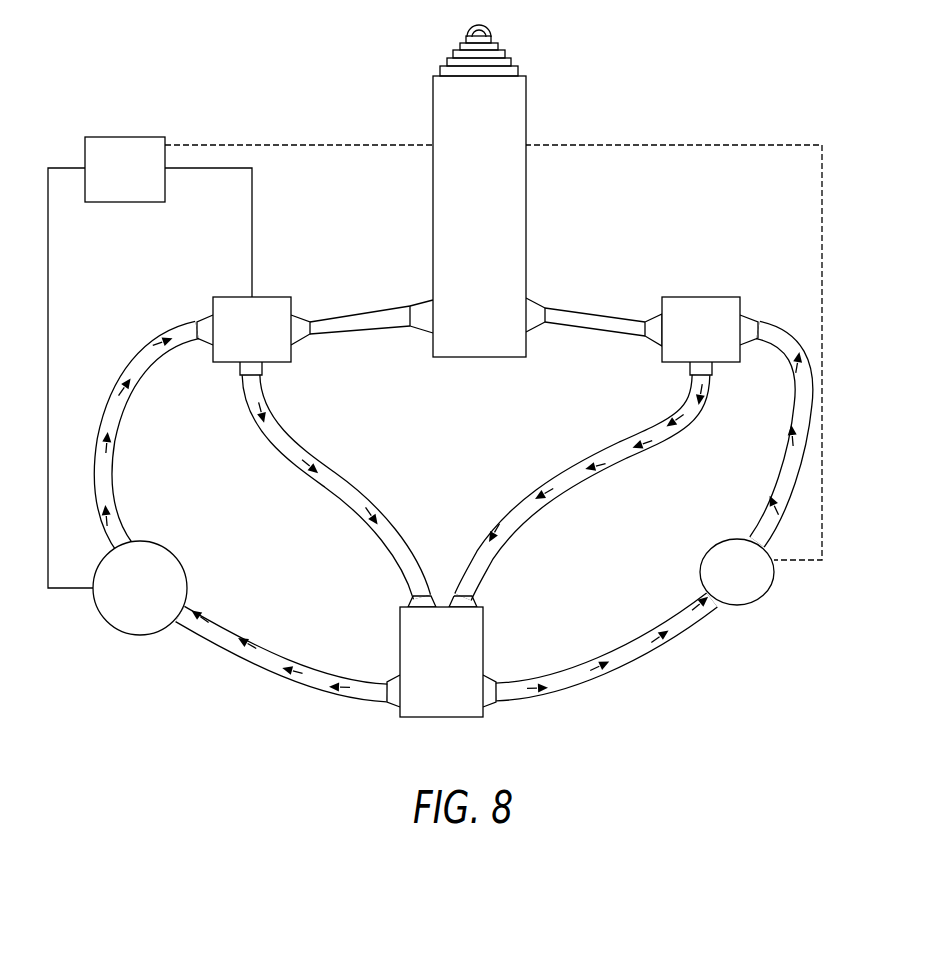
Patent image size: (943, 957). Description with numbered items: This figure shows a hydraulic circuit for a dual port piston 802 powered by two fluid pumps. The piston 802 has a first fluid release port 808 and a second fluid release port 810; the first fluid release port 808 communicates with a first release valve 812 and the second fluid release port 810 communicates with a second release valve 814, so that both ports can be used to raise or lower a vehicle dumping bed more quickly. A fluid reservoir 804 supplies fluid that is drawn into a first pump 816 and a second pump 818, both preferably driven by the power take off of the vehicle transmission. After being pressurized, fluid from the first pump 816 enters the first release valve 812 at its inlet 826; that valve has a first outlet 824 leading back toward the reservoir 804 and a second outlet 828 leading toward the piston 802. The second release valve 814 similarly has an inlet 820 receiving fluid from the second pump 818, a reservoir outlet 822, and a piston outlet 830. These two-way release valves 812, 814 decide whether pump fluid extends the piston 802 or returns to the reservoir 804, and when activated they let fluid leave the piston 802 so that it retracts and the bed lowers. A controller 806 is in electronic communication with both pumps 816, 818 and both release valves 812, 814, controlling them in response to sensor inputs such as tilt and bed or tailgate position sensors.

The dual port piston 802 is at (528, 113).
The fluid reservoir 804 is at (422, 682).
The controller 806 is at (106, 182).
The first fluid release port 808 is at (420, 298).
The second fluid release port 810 is at (530, 300).
The first release valve 812 is at (233, 343).
The second release valve 814 is at (682, 343).
The first pump 816 is at (121, 606).
The second pump 818 is at (718, 588).
The inlet 820 is at (748, 318).
The reservoir outlet 822 is at (718, 368).
The first outlet 824 is at (282, 368).
The inlet 826 is at (210, 312).
The second outlet 828 is at (312, 313).
The piston outlet 830 is at (646, 318).